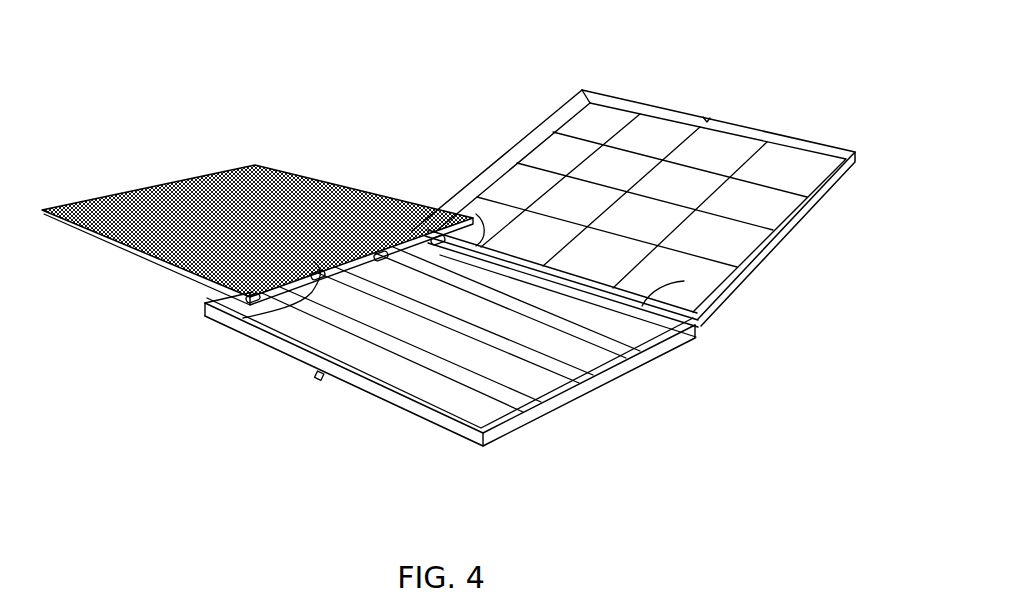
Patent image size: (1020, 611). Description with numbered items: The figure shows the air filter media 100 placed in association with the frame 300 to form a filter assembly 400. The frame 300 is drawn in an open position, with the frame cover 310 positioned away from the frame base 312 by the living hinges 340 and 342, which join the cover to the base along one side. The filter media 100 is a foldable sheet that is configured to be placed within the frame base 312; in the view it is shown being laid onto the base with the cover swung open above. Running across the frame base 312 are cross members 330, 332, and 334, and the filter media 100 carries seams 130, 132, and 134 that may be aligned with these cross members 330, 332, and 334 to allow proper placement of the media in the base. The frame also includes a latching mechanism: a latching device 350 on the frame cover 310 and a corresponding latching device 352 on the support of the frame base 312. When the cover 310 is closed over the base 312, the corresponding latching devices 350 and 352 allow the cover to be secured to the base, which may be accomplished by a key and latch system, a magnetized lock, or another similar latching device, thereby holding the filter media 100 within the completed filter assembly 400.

The filter assembly 400 is at (297, 75).
The air filter media 100 is at (172, 161).
The seam 130 is at (326, 264).
The seam 132 is at (365, 194).
The seam 134 is at (243, 318).
The frame 300 is at (488, 102).
The frame cover 310 is at (633, 171).
The frame base 312 is at (459, 362).
The cross member 330 is at (600, 338).
The cross member 332 is at (547, 364).
The cross member 334 is at (505, 395).
The living hinge 340 is at (476, 214).
The living hinge 342 is at (722, 306).
The latching device 350 is at (706, 116).
The latching device 352 is at (318, 378).